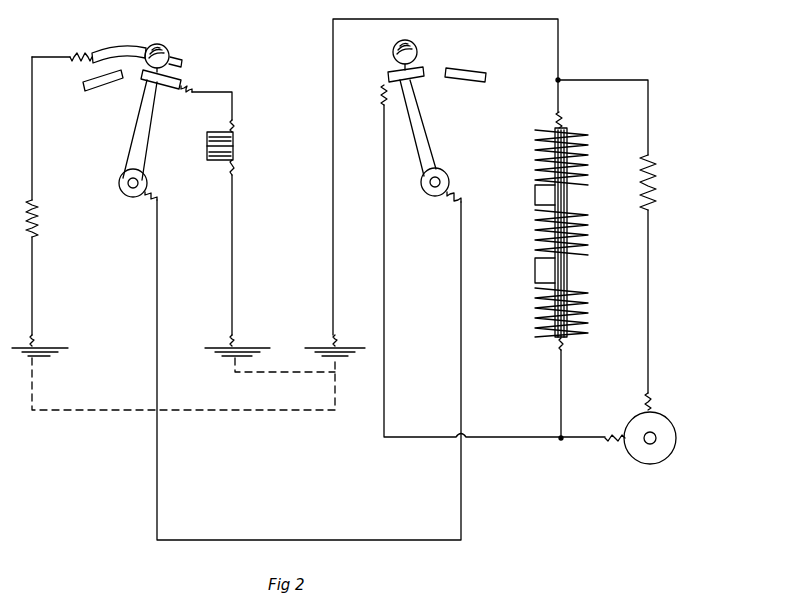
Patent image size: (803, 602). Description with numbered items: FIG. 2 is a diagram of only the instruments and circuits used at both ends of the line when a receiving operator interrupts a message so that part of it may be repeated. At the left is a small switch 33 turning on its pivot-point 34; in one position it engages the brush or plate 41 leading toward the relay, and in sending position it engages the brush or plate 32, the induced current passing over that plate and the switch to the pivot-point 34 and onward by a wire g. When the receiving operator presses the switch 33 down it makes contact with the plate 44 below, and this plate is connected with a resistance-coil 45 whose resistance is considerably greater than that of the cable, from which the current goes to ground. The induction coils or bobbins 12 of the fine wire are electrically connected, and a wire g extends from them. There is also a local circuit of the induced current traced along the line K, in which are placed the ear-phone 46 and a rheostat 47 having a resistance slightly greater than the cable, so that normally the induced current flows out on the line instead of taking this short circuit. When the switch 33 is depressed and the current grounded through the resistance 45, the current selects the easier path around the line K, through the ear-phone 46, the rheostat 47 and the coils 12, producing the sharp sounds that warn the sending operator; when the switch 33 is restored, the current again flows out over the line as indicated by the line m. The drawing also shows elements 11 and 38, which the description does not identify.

The core 11 is at (568, 200).
The induction coils or bobbins 12 is at (568, 182).
The brush or plate 32 is at (101, 82).
The switch 33 is at (148, 147).
The pivot-point 34 is at (148, 185).
The condenser 38 is at (236, 152).
The brush or plate 41 is at (181, 83).
The plate 44 is at (112, 53).
The resistance-coil 45 is at (40, 222).
The ear-phone 46 is at (668, 426).
The rheostat 47 is at (658, 186).
The wire g is at (554, 395).
The line K is at (660, 110).
The line m is at (158, 355).